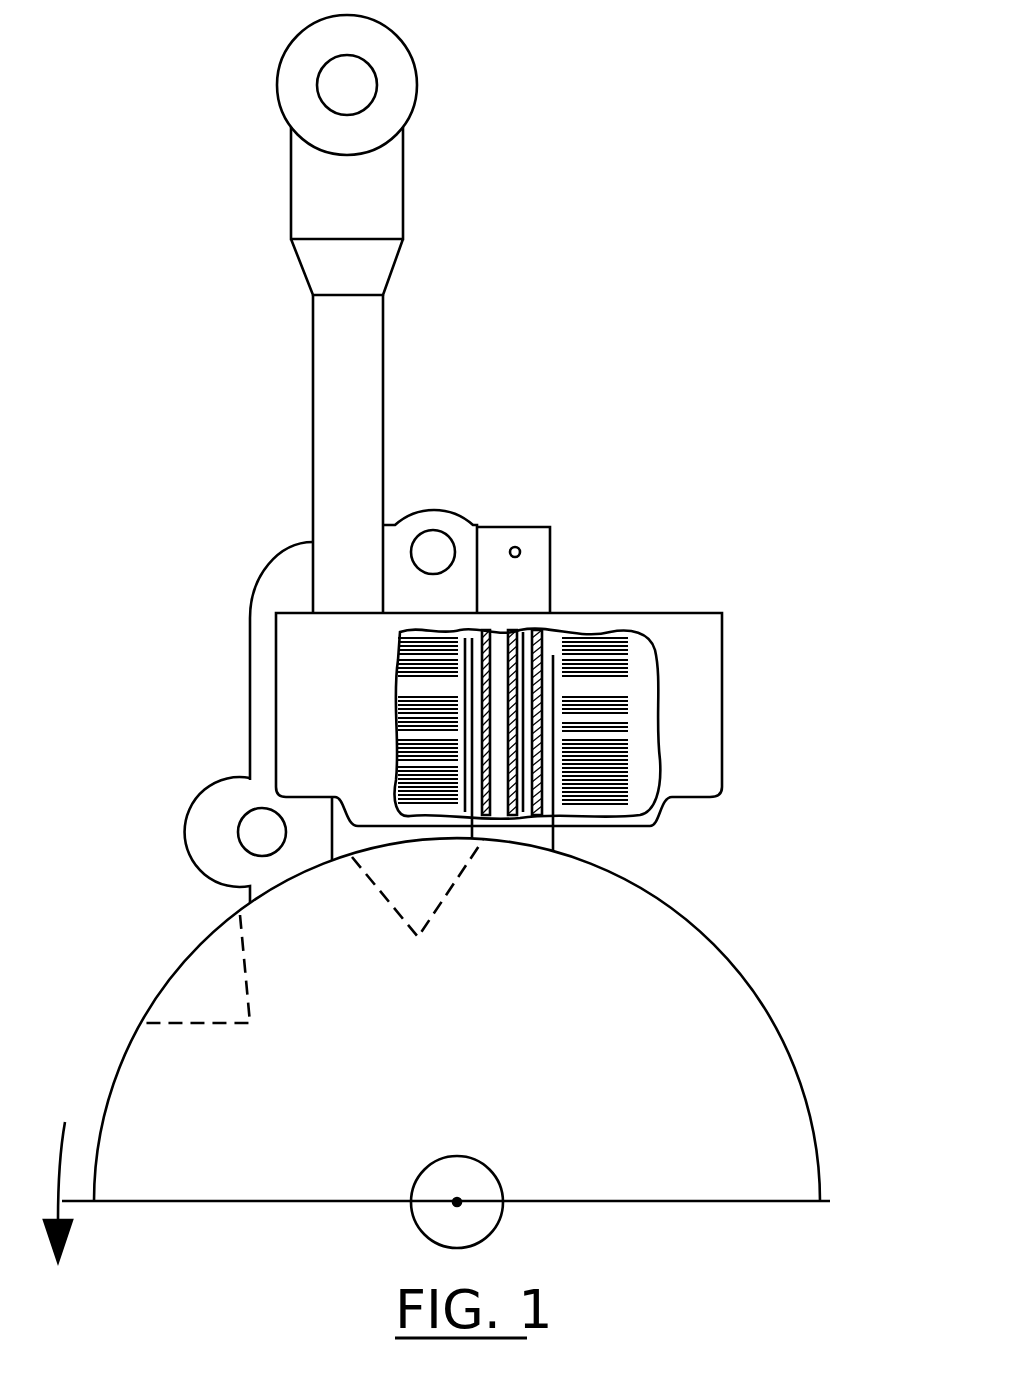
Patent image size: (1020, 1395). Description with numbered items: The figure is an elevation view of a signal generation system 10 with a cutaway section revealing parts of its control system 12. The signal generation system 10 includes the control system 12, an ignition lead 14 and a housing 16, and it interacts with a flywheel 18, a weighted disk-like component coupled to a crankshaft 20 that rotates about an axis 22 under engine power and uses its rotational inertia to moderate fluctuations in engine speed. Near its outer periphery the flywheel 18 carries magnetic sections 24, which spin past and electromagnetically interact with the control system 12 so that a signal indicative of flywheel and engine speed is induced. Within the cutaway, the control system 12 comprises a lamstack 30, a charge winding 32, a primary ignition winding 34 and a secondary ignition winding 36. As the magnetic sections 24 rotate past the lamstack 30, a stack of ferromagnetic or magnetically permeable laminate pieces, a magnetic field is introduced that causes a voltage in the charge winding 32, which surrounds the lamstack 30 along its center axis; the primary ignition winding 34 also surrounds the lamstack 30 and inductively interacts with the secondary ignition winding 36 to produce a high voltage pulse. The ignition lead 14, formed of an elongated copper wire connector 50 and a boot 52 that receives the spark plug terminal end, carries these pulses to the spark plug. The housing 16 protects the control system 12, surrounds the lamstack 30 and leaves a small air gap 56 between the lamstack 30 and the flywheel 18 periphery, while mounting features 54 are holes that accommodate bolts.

The signal generation system 10 is at (690, 185).
The control system 12 is at (733, 590).
The ignition lead 14 is at (458, 42).
The housing 16 is at (295, 777).
The flywheel 18 is at (771, 1127).
The crankshaft 20 is at (493, 1227).
The axis 22 is at (457, 1202).
The magnetic sections 24 is at (405, 920).
The lamstack 30 is at (560, 585).
The charge winding 32 is at (565, 762).
The primary ignition winding 34 is at (565, 762).
The secondary ignition winding 36 is at (397, 703).
The connector 50 is at (313, 390).
The boot 52 is at (277, 78).
The mounting features 54 is at (437, 552).
The air gap 56 is at (537, 836).